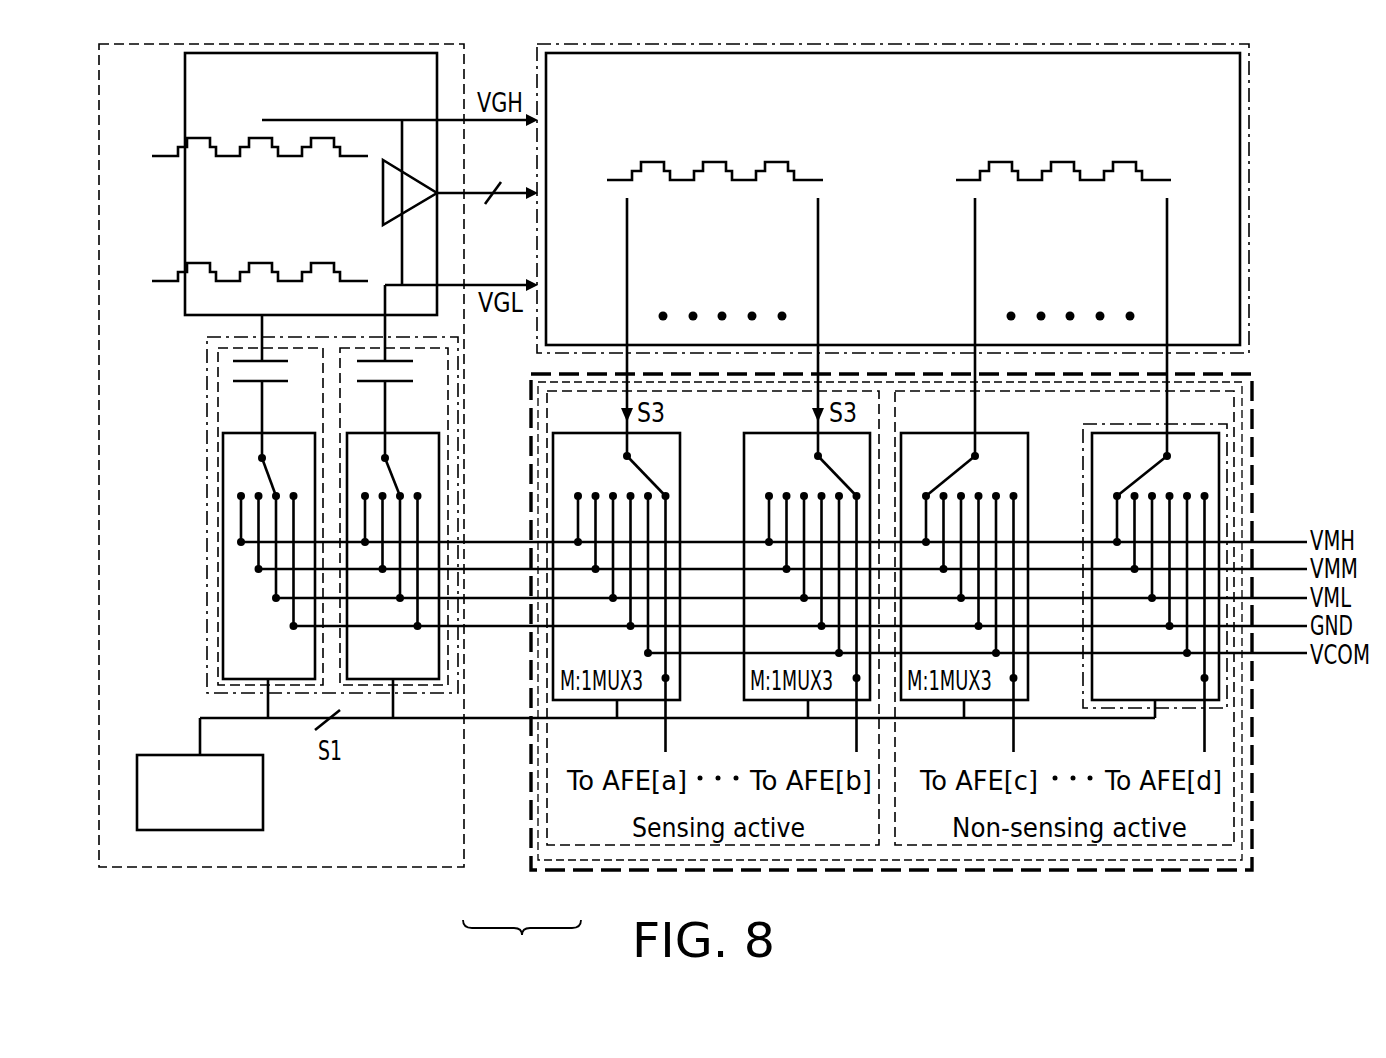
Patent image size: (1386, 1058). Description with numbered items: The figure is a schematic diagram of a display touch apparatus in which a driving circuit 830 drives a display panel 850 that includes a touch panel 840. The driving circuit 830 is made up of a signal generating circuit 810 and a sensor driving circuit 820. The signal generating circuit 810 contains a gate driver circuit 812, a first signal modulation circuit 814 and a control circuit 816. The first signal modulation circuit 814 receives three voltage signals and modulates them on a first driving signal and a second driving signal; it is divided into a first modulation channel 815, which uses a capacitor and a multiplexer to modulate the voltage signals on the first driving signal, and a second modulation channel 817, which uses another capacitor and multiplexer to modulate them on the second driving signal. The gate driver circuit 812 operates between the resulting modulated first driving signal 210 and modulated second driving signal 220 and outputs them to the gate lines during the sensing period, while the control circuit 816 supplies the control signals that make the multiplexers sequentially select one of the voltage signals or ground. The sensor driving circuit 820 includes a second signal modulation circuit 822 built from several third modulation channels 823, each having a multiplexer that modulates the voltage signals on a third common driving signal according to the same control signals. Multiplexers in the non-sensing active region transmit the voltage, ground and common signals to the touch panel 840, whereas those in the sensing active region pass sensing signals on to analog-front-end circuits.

The signal generating circuit 810 is at (465, 850).
The gate driver circuit 812 is at (185, 78).
The modulated first driving signal 210 is at (237, 154).
The modulated second driving signal 220 is at (237, 279).
The first signal modulation circuit 814 is at (207, 570).
The first modulation channel 815 is at (218, 633).
The control circuit 816 is at (263, 793).
The second modulation channel 817 is at (448, 418).
The sensor driving circuit 820 is at (553, 870).
The second signal modulation circuit 822 is at (1242, 838).
The third modulation channel 823 is at (1227, 424).
The driving circuit 830 is at (522, 942).
The touch panel 840 is at (1240, 198).
The display panel 850 is at (1249, 283).